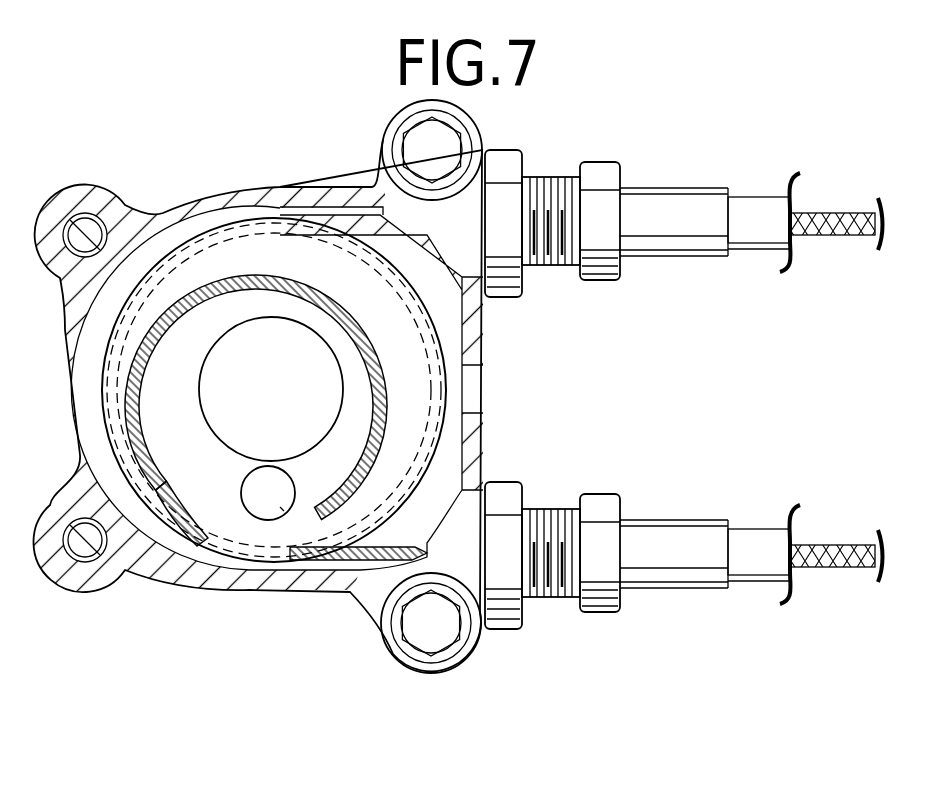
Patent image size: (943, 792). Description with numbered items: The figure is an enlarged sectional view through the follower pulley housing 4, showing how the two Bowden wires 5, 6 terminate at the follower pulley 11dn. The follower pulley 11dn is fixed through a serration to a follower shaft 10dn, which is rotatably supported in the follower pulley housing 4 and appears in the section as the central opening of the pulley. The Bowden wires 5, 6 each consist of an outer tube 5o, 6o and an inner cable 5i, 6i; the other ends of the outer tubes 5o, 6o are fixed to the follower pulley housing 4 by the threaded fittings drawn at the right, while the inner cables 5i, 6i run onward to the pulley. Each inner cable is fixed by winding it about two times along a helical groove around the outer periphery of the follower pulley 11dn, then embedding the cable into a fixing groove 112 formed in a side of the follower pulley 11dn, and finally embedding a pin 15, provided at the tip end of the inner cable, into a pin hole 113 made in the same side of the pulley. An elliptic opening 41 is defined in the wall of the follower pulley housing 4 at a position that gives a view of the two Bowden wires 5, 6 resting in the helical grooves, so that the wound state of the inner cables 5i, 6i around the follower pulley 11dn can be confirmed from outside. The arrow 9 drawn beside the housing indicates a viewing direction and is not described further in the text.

The follower pulley housing 4 is at (233, 590).
The elliptic opening 41 is at (472, 410).
The follower pulley 11dn is at (262, 245).
The fixing groove 112 is at (320, 303).
The follower shaft 10dn is at (217, 392).
The pin hole 113 is at (267, 473).
The pin 15 is at (280, 507).
The rotation direction 9 is at (578, 388).
The Bowden wire 6 is at (684, 163).
The outer tube 6o is at (775, 207).
The inner cable 6i is at (853, 213).
The Bowden wire 5 is at (684, 611).
The outer tube 5o is at (751, 553).
The inner cable 5i is at (836, 555).